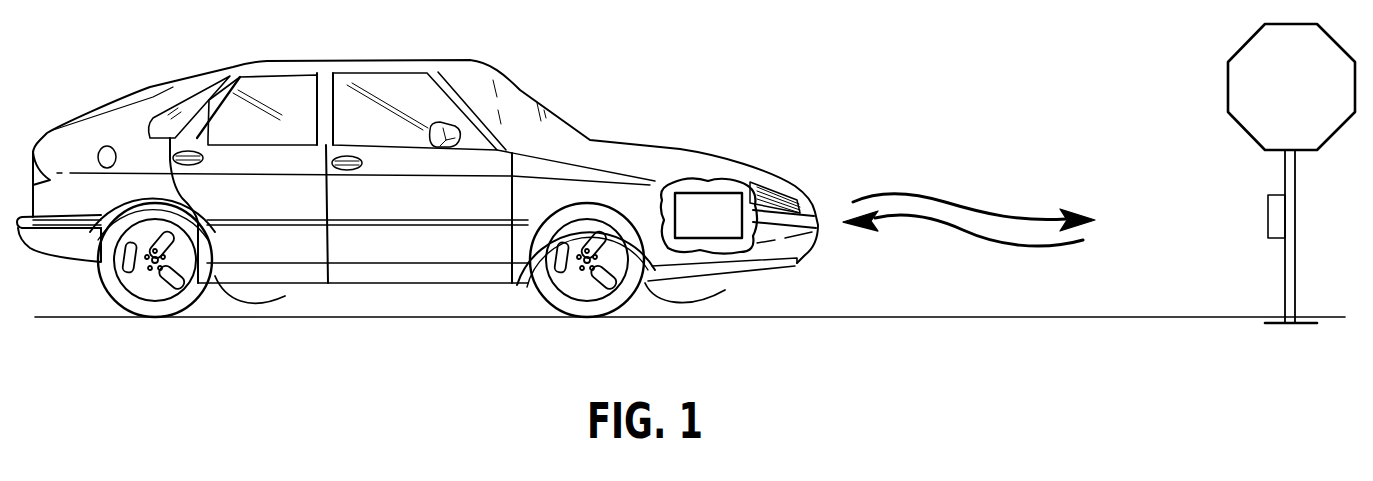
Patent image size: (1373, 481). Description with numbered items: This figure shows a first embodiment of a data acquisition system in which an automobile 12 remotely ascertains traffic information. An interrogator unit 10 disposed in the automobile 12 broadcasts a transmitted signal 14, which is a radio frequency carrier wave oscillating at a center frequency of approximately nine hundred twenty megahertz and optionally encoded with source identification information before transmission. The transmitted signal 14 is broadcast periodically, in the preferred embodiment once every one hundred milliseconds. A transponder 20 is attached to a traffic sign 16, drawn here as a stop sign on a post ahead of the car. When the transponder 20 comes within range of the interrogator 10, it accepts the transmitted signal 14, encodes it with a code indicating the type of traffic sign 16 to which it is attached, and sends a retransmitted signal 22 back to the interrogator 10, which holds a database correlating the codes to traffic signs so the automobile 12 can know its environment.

The interrogator unit 10 is at (714, 229).
The automobile 12 is at (420, 209).
The transmitted signal 14 is at (968, 205).
The traffic sign 16 is at (1301, 99).
The transponder 20 is at (1268, 220).
The retransmitted signal 22 is at (963, 232).